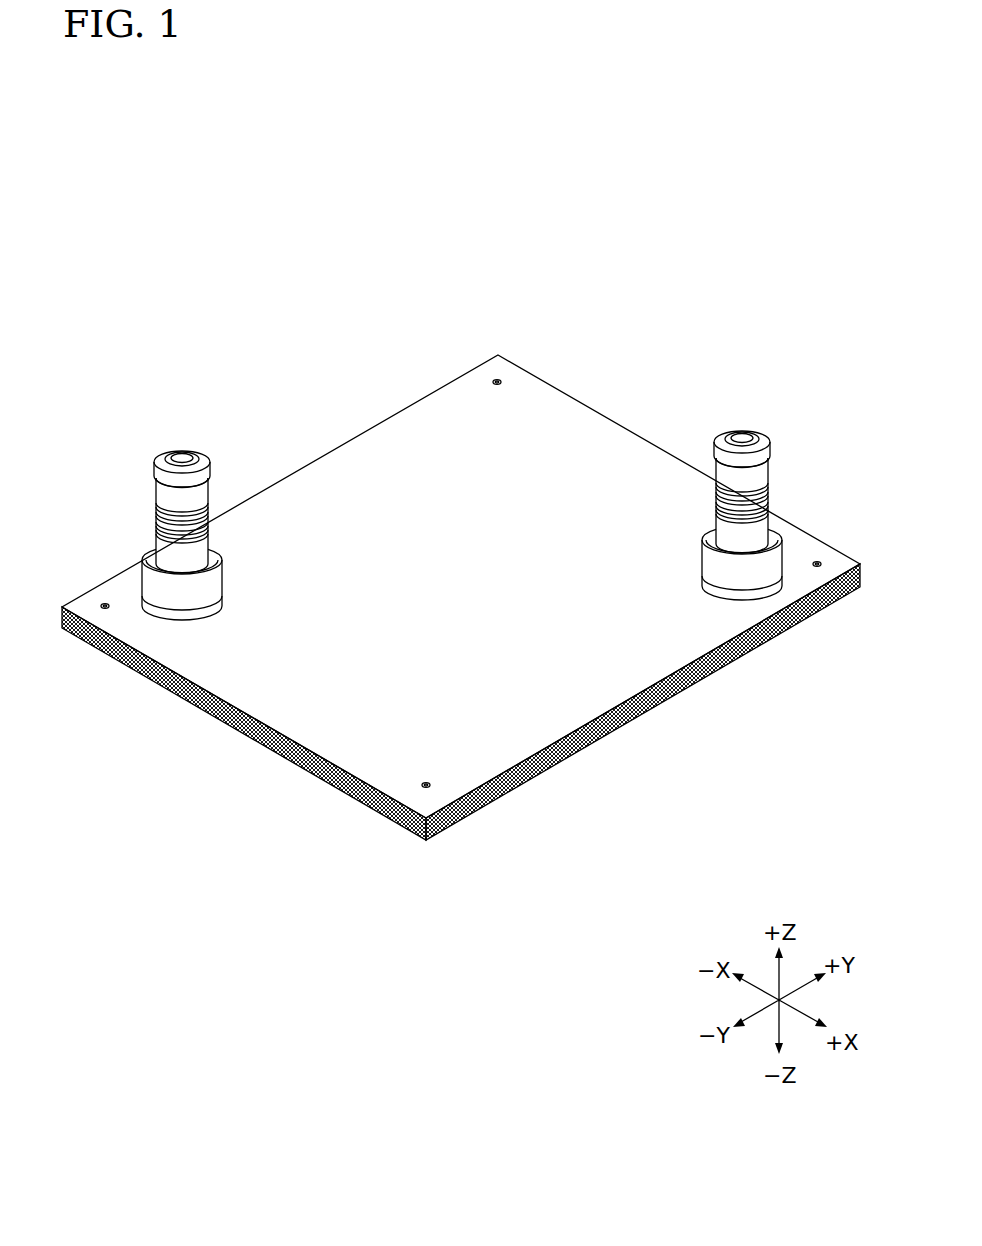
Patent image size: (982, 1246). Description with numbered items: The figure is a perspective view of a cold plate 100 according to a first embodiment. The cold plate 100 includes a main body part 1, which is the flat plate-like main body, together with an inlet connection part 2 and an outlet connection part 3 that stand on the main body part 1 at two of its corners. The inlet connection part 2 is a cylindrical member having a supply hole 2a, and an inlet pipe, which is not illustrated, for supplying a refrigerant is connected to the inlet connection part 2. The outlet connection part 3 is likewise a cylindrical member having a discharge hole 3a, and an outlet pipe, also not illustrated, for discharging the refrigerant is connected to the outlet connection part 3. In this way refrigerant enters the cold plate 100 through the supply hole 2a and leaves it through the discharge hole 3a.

The cold plate 100 is at (178, 297).
The main body part 1 is at (403, 462).
The inlet connection part 2 is at (146, 509).
The supply hole 2a is at (175, 458).
The outlet connection part 3 is at (773, 464).
The discharge hole 3a is at (734, 440).